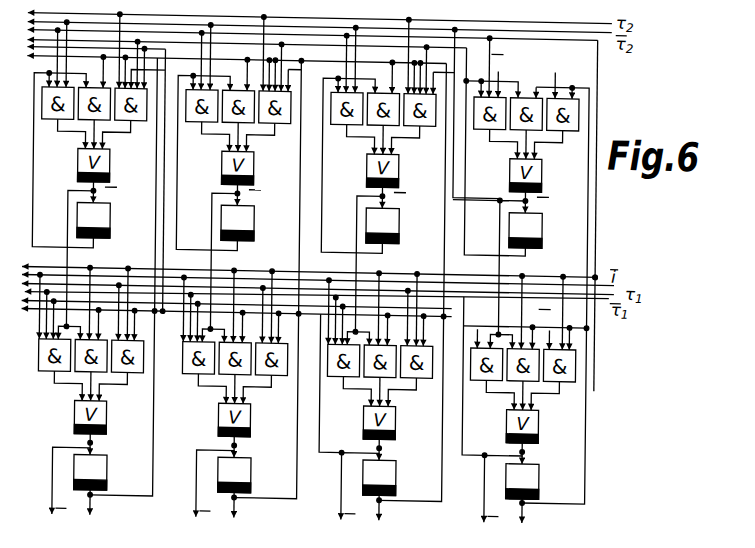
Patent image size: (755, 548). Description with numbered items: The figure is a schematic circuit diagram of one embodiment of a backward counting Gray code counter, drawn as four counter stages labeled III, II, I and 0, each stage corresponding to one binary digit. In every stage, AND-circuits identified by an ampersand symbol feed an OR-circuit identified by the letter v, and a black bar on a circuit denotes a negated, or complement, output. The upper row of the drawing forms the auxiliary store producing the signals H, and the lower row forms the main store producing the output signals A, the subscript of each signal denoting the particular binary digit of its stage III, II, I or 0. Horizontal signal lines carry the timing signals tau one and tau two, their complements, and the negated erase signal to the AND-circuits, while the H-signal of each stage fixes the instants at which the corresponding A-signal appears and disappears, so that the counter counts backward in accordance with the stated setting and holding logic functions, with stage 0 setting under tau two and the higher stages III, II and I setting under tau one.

The stage III (bit 3) of the counter III is at (98, 271).
The stage II (bit 2) of the counter II is at (238, 274).
The stage I (bit 1) of the counter I is at (410, 277).
The stage 0 (bit 0) of the counter 0 is at (524, 287).